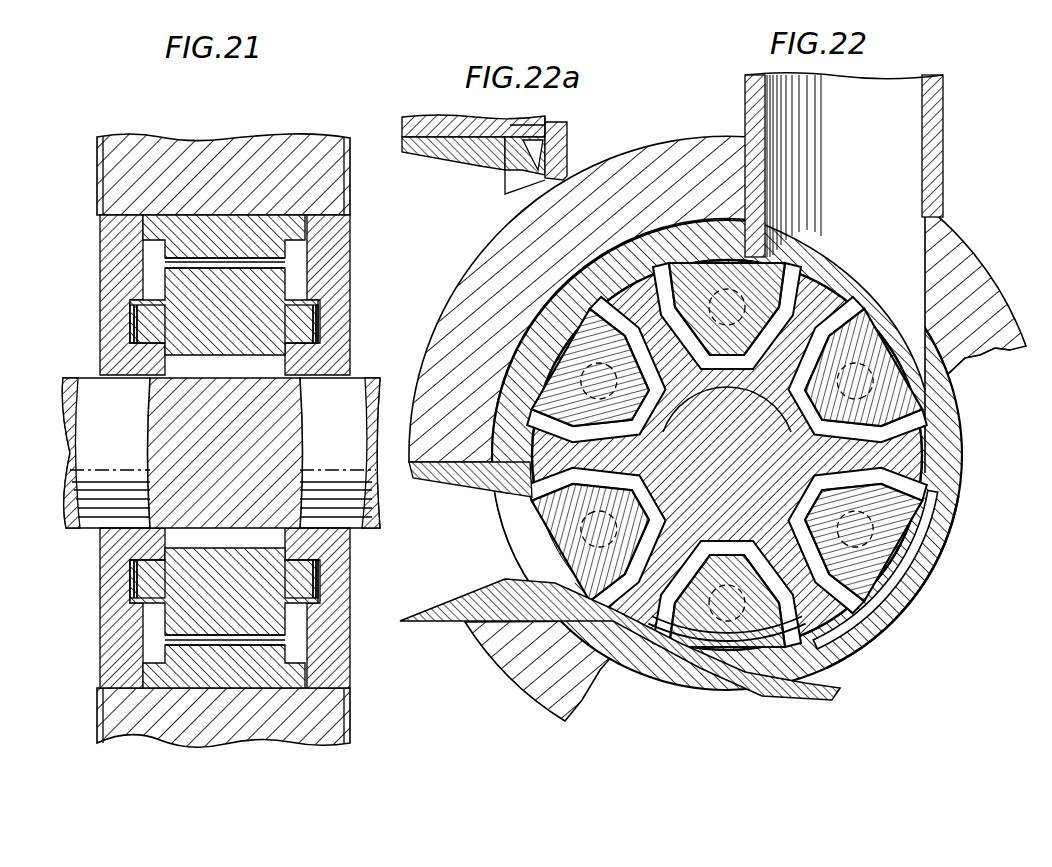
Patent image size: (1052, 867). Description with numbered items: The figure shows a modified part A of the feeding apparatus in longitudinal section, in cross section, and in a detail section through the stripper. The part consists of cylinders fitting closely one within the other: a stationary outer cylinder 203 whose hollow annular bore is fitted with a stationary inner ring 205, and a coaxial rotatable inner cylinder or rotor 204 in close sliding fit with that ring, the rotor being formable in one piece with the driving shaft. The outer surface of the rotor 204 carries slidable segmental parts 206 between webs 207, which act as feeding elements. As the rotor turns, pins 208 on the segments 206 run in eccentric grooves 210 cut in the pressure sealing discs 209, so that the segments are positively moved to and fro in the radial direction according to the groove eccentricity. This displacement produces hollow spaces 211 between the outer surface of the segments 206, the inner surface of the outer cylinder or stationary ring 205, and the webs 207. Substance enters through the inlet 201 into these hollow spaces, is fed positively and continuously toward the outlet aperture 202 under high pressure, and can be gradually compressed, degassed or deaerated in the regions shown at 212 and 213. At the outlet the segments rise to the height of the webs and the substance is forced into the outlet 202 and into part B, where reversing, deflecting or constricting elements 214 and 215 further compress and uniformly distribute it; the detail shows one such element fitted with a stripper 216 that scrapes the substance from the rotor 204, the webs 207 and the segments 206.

In FIG. 22, the inlet 201 is at (920, 162).
In FIG. 22A, the outlet aperture 202 is at (520, 192).
In FIG. 22, the outlet aperture 202 is at (512, 550).
In FIG. 21, the outer cylinder 203 is at (102, 160).
In FIG. 22A, the outer cylinder 203 is at (405, 124).
In FIG. 22, the outer cylinder 203 is at (478, 274).
In FIG. 21, the inner cylinder or rotor 204 is at (76, 468).
In FIG. 22A, the inner cylinder or rotor 204 is at (566, 150).
In FIG. 22, the inner cylinder or rotor 204 is at (727, 427).
In FIG. 21, the stationary inner ring 205 is at (340, 224).
In FIG. 22A, the stationary inner ring 205 is at (546, 123).
In FIG. 22, the stationary inner ring 205 is at (906, 584).
In FIG. 21, the slidable segmental parts 206 is at (150, 272).
In FIG. 22, the slidable segmental parts 206 is at (515, 377).
In FIG. 22, the webs 207 is at (818, 268).
In FIG. 21, the pins 208 is at (292, 302).
In FIG. 22, the pins 208 is at (614, 352).
In FIG. 21, the pressure sealing discs 209 is at (102, 236).
In FIG. 21, the eccentric grooves 210 is at (318, 332).
In FIG. 22, the hollow spaces 211 is at (910, 386).
In FIG. 22, the compression, degassing or deaeration region 212 is at (925, 530).
In FIG. 21, the compression, degassing or deaeration region 213 is at (298, 264).
In FIG. 22, the compression, degassing or deaeration region 213 is at (770, 650).
In FIG. 22, the reversing, deflecting or constricting element 214 is at (482, 618).
In FIG. 22A, the reversing, deflecting or constricting element 215 is at (446, 150).
In FIG. 22, the reversing, deflecting or constricting element 215 is at (465, 482).
In FIG. 22A, the stripper 216 is at (503, 172).